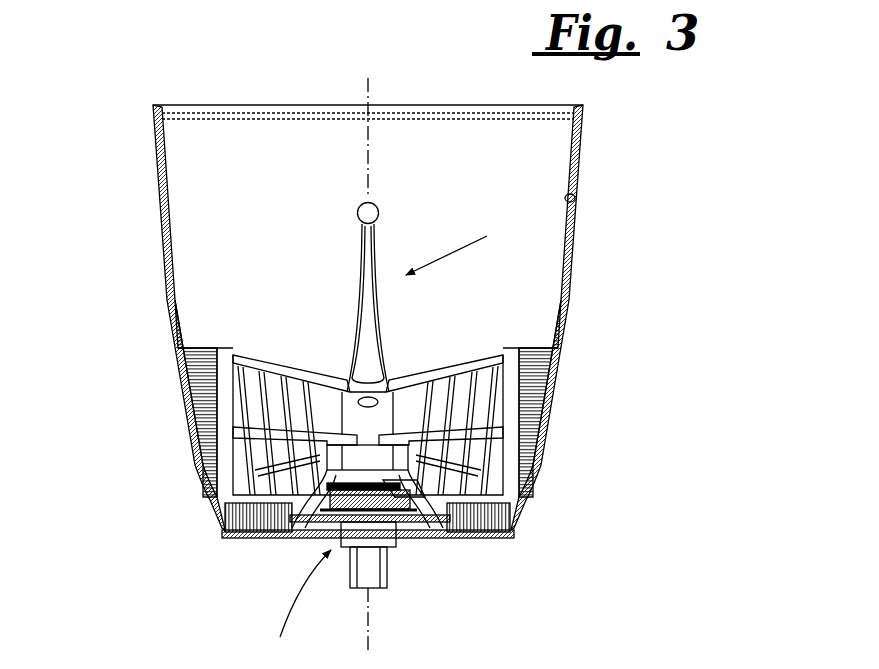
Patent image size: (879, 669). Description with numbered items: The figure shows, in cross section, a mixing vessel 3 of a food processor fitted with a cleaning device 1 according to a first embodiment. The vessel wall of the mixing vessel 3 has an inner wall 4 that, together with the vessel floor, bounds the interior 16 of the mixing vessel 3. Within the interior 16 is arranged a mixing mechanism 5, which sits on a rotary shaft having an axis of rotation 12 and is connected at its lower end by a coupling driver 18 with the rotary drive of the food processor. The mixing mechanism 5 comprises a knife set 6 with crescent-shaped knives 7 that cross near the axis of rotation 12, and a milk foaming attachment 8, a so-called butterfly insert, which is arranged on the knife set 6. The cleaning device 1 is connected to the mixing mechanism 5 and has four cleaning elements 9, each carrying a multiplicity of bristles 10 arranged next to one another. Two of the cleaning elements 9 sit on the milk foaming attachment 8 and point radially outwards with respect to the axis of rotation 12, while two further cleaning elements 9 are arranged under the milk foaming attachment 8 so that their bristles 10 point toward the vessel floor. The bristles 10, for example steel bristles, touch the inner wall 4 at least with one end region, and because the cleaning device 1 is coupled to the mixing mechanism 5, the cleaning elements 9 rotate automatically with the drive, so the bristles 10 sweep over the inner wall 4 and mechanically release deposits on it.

The cleaning device 1 is at (208, 339).
The mixing vessel 3 is at (594, 157).
The inner wall 4 is at (575, 200).
The mixing mechanism 5 is at (392, 434).
The knife set 6 is at (412, 474).
The knife 7 is at (447, 487).
The milk foaming attachment 8 is at (368, 347).
The cleaning element 9 is at (205, 378).
The bristles 10 is at (205, 457).
The axis of rotation 12 is at (368, 624).
The interior 16 is at (215, 280).
The coupling driver 18 is at (378, 563).